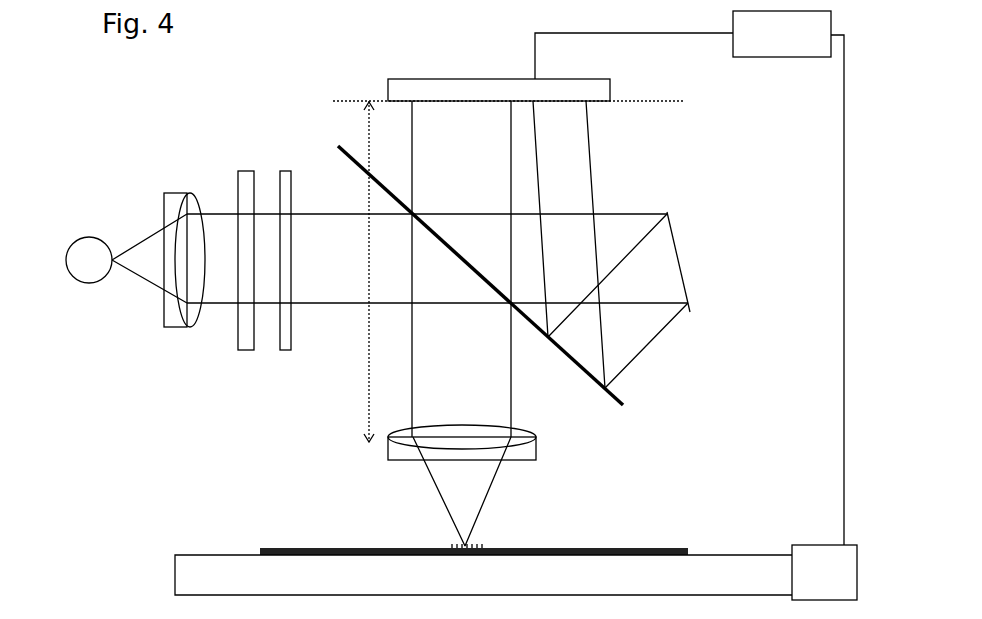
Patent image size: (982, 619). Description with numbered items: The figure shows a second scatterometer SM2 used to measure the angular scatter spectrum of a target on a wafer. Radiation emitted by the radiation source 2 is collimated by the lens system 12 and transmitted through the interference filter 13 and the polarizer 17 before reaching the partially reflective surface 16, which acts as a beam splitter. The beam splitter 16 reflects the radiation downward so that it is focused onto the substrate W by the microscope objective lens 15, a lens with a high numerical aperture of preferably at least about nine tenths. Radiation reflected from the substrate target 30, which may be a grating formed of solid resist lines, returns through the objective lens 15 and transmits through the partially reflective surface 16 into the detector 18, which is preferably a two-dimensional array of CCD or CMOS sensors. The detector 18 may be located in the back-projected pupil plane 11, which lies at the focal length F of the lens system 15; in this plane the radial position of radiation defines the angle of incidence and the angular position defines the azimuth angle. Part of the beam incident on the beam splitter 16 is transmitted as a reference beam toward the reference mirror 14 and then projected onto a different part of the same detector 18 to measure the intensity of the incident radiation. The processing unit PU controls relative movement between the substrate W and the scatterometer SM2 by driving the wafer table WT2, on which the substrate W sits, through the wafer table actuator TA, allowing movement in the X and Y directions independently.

The radiation source 2 is at (126, 258).
The back-projected pupil plane 11 is at (683, 101).
The lens system 12 is at (174, 193).
The interference filter 13 is at (248, 171).
The polarizer 17 is at (285, 171).
The partially reflective surface 16 is at (607, 403).
The detector 18 is at (420, 79).
The reference mirror 14 is at (670, 210).
The microscope objective lens 15 is at (388, 450).
The substrate target 30 is at (489, 533).
The scatterometer SM2 is at (120, 181).
The substrate W is at (580, 547).
The wafer table WT2 is at (483, 575).
The processing unit PU is at (782, 34).
The wafer table actuator TA is at (824, 572).
The focal length F is at (362, 271).